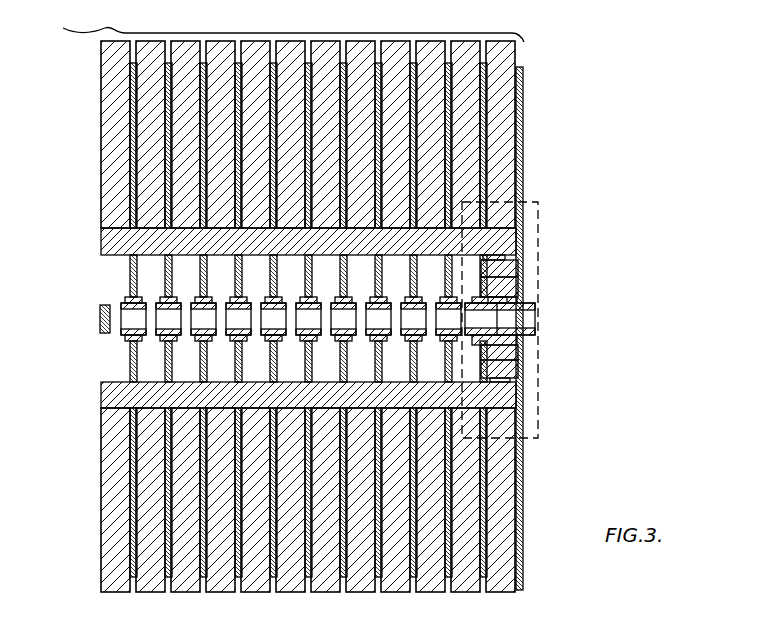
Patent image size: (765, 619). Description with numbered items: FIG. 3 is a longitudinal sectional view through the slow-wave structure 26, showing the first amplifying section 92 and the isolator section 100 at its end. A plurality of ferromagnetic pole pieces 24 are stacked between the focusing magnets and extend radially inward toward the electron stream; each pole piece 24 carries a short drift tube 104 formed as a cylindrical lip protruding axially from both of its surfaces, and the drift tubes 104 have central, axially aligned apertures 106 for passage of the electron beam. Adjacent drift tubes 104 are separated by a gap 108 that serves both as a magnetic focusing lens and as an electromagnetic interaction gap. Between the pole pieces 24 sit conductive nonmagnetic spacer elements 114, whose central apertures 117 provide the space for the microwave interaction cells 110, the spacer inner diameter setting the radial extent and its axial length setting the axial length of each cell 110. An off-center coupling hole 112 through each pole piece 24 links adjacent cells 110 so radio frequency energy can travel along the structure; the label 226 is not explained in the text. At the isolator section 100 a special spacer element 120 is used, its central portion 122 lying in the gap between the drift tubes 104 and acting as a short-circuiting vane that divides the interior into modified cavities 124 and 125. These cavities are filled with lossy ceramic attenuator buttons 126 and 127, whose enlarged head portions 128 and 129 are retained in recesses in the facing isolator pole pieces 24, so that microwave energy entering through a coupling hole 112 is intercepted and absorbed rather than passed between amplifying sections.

The ferromagnetic pole piece 24 is at (250, 42).
The slow-wave structure 26 is at (541, 42).
The first amplifying section 92 is at (282, 32).
The spacers 226 is at (272, 40).
The isolator section 100 is at (538, 420).
The drift tube 104 is at (125, 336).
The aperture 106 is at (137, 317).
The gap 108 is at (113, 300).
The microwave interaction cell 110 is at (226, 288).
The coupling hole 112 is at (270, 283).
The slow-wave circuit spacer element 114 is at (128, 392).
The central aperture 117 is at (110, 256).
The special spacer element 120 is at (505, 228).
The central portion 122 is at (506, 305).
The modified cavity 124 is at (518, 381).
The modified cavity 125 is at (508, 258).
The lossy ceramic button 126 is at (518, 353).
The lossy ceramic button 127 is at (518, 285).
The enlarged head portion 128 is at (478, 340).
The enlarged head portion 129 is at (518, 268).